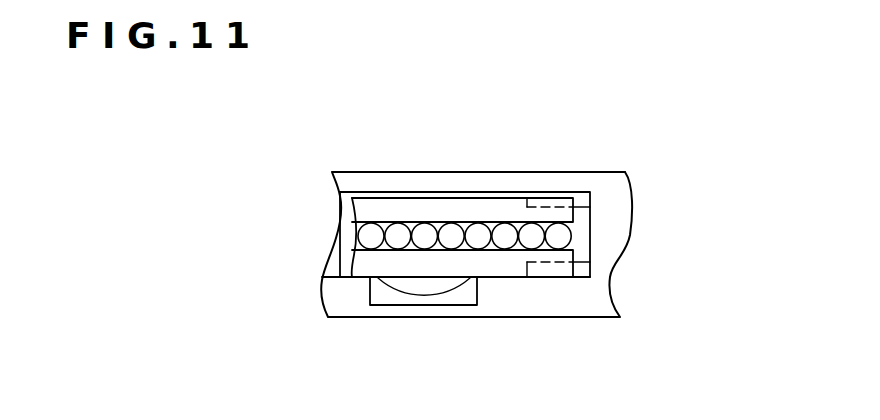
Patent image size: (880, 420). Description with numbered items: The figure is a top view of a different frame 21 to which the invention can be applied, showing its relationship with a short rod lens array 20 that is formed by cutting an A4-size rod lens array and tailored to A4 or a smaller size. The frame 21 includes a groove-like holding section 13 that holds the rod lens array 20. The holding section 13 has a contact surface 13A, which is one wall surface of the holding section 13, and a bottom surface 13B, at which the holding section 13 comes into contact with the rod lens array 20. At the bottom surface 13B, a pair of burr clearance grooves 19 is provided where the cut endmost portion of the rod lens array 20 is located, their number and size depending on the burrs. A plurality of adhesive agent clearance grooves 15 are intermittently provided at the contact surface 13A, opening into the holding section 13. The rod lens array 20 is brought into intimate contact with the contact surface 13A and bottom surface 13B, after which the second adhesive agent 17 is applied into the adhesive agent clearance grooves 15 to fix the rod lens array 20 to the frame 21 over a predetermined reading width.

The holding section 13 is at (342, 206).
The contact surface 13A is at (323, 270).
The bottom surface 13B is at (338, 248).
The adhesive agent clearance groove 15 is at (470, 295).
The second adhesive agent 17 is at (413, 285).
The burr clearance groove 19 is at (583, 203).
The rod lens array 20 is at (435, 208).
The frame 21 is at (522, 173).